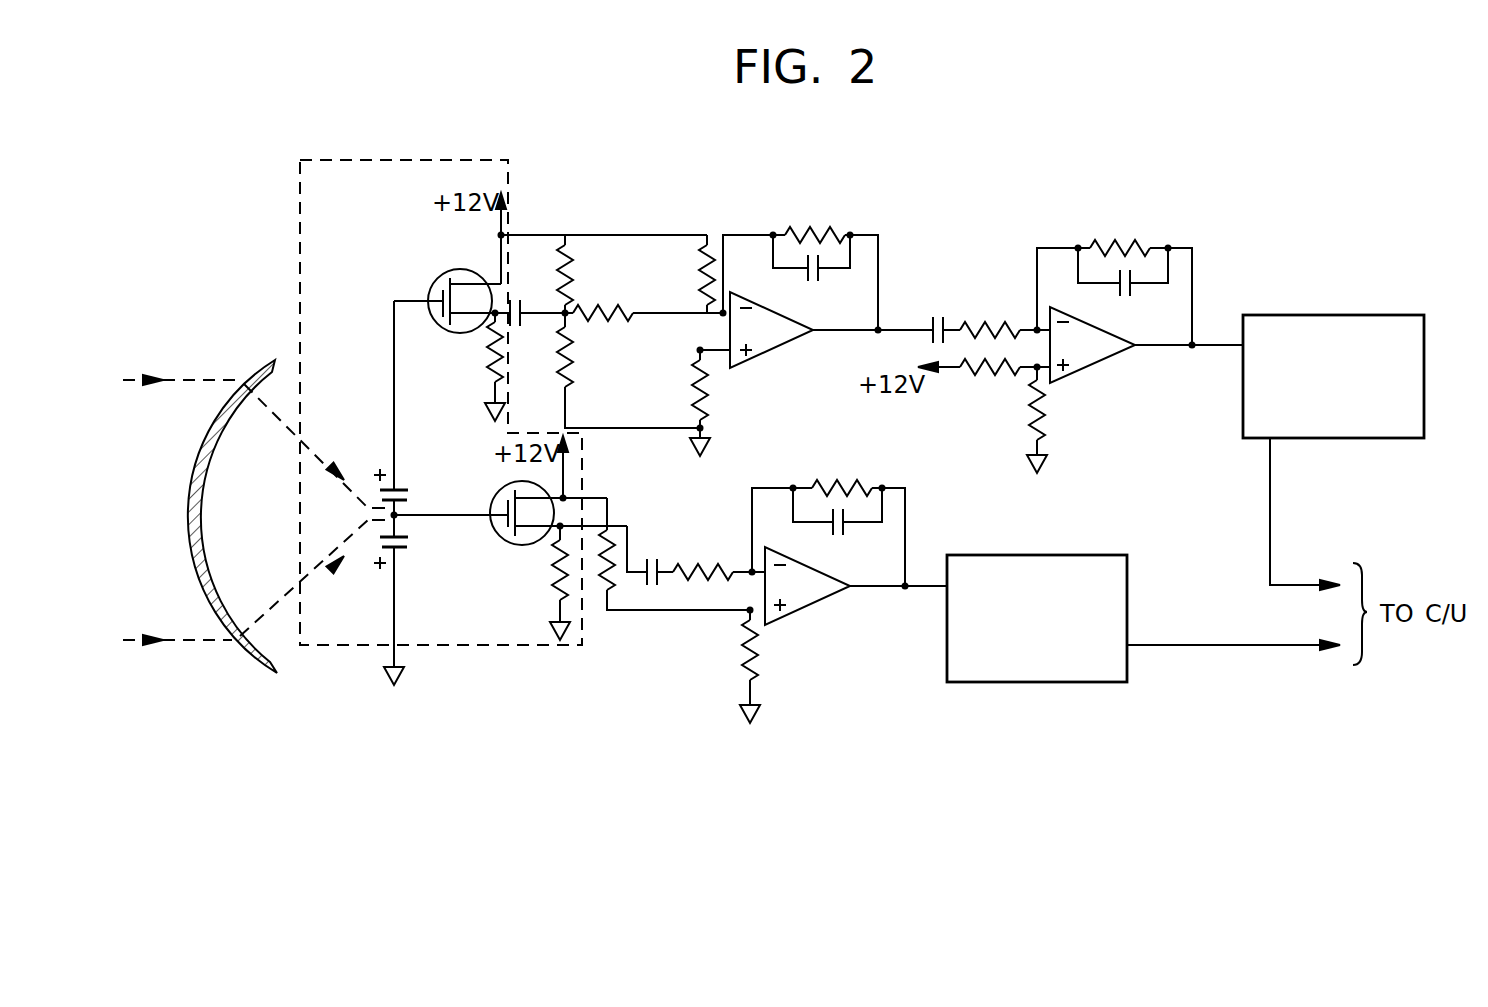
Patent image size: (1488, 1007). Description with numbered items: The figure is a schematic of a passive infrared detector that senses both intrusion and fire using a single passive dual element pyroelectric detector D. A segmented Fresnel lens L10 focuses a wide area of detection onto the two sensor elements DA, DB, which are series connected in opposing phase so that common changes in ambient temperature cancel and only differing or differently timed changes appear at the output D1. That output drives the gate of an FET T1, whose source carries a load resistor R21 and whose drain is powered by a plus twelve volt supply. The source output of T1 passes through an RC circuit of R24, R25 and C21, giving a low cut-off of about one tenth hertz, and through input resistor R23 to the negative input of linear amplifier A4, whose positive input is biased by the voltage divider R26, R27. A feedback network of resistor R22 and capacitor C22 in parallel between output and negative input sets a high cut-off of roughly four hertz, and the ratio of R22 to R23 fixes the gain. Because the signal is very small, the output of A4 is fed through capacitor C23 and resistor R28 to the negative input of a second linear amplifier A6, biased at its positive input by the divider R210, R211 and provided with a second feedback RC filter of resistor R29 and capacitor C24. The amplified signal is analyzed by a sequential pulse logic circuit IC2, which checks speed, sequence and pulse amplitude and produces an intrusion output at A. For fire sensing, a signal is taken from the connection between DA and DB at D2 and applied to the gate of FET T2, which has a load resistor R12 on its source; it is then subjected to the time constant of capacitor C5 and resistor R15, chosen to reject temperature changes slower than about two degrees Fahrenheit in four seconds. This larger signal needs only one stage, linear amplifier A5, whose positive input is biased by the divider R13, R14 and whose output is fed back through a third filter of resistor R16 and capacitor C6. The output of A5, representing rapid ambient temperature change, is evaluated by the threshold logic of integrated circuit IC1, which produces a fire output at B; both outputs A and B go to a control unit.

The segmented (Fresnel) lens L10 is at (244, 371).
The passive dual element pyroelectric detector D is at (445, 648).
The sensor element DA is at (400, 487).
The sensor element DB is at (396, 550).
The output D1 is at (394, 367).
The connection of sensor DB to sensor DA D2 is at (435, 518).
The FET T1 is at (457, 311).
The FET T2 is at (546, 512).
The load resistor R21 is at (470, 366).
The capacitor C21 is at (541, 298).
The resistor R25 is at (592, 274).
The resistor R27 is at (683, 274).
The input resistor R23 is at (648, 302).
The resistor R24 is at (628, 370).
The resistor R26 is at (726, 402).
The linear amplifier A4 is at (767, 330).
The feedback resistor R22 is at (800, 265).
The capacitor C22 is at (811, 275).
The capacitor C23 is at (938, 317).
The resistor R28 is at (1005, 317).
The linear amplifier A6 is at (1085, 345).
The resistor R29 is at (1114, 280).
The capacitor C24 is at (1123, 288).
The resistor R210 is at (984, 383).
The resistor R211 is at (1068, 420).
The sequential pulse logic circuit IC2 is at (1333, 376).
The load resistor R12 is at (537, 583).
The resistor R13 is at (674, 555).
The capacitor C5 is at (650, 555).
The resistor R15 is at (719, 558).
The linear amplifier A5 is at (799, 586).
The resistor R14 is at (774, 666).
The resistor R16 is at (828, 521).
The capacitor C6 is at (837, 528).
The integrated circuit logic means IC1 is at (1037, 618).
The output A is at (1305, 514).
The output B is at (1233, 634).